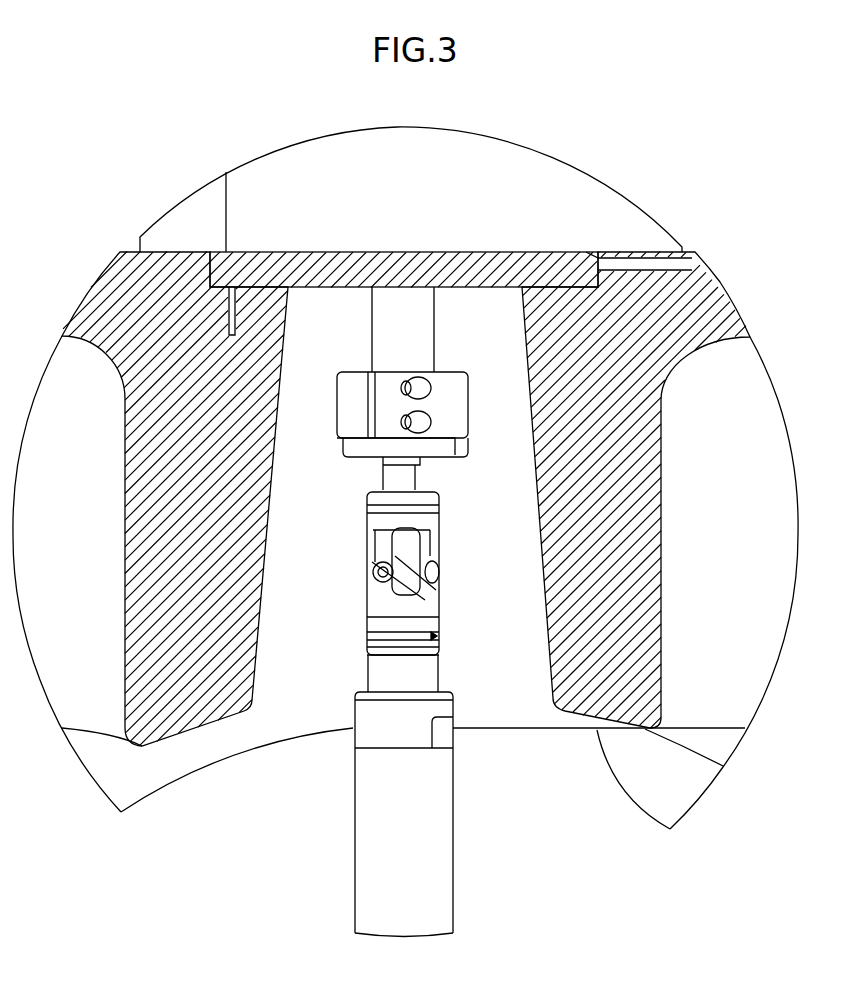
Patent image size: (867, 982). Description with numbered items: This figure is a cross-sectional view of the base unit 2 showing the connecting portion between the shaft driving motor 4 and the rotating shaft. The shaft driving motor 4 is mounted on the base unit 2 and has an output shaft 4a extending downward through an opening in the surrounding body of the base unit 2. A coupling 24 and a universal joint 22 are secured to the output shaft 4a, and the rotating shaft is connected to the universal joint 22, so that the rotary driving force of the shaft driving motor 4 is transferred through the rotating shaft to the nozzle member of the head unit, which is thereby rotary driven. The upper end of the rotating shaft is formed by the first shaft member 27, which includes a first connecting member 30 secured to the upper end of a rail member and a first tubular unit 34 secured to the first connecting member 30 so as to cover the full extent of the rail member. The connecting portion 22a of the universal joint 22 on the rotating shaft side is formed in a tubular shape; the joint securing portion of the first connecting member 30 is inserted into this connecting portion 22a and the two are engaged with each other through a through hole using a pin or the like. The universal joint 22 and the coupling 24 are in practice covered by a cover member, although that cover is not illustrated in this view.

The cylinder head 2 is at (665, 284).
The shaft driving motor 4 is at (566, 176).
The output shaft 4a is at (420, 333).
The coupling 24 is at (455, 416).
The universal joint 22 is at (446, 572).
The connecting portion 22a is at (440, 646).
The first connecting member 30 is at (368, 673).
The first tubular unit 34 is at (362, 811).
The first shaft member 27 is at (401, 714).